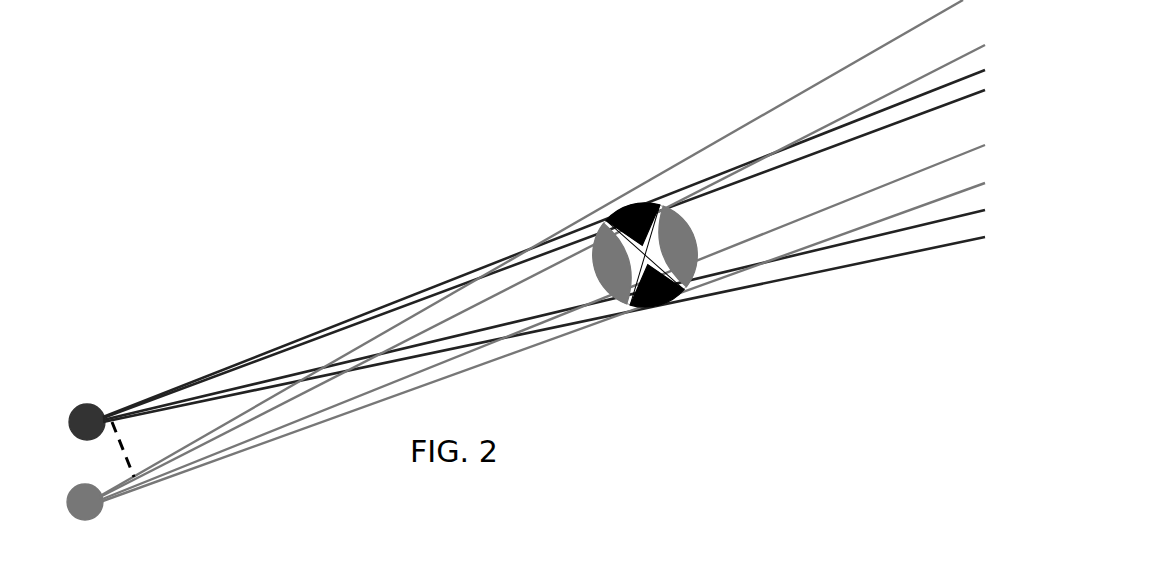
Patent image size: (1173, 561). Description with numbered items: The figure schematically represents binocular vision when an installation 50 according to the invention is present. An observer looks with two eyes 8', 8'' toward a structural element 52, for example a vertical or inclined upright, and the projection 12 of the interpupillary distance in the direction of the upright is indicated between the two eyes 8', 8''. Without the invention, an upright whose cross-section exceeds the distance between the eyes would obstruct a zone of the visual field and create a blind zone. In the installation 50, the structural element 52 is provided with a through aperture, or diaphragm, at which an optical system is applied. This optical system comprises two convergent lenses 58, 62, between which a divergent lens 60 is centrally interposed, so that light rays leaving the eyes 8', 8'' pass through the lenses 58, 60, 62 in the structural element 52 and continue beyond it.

The observer's eye 8' is at (527, 255).
The observer's eye 8'' is at (526, 270).
The projection of the interpupillary distance 12 is at (134, 452).
The installation 50 is at (620, 209).
The structural element 52 is at (638, 205).
The convergent lens 58 is at (607, 273).
The divergent lens 60 is at (645, 253).
The convergent lens 62 is at (697, 253).